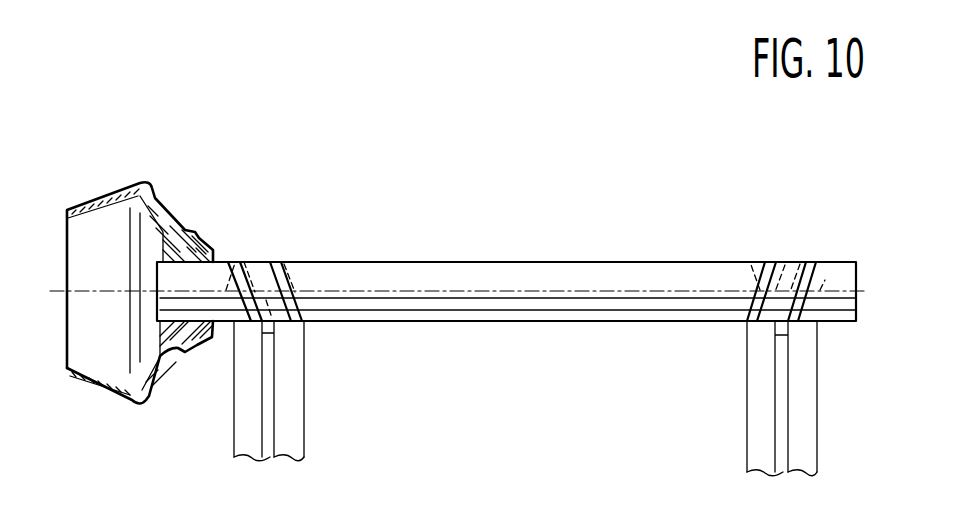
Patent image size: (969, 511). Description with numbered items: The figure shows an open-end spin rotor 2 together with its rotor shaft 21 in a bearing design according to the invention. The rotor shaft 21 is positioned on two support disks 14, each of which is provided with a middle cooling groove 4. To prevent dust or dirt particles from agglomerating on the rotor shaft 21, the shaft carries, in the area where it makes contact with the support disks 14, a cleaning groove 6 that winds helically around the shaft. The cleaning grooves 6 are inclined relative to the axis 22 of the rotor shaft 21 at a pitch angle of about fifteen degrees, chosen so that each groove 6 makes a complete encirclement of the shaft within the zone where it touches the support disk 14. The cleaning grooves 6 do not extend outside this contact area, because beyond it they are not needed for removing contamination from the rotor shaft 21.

The open-end spin rotor 2 is at (88, 172).
The middle cooling groove 4 is at (268, 410).
The cleaning groove 6 is at (286, 286).
The support disk 14 is at (292, 363).
The rotor shaft 21 is at (433, 273).
The axis 22 is at (498, 293).